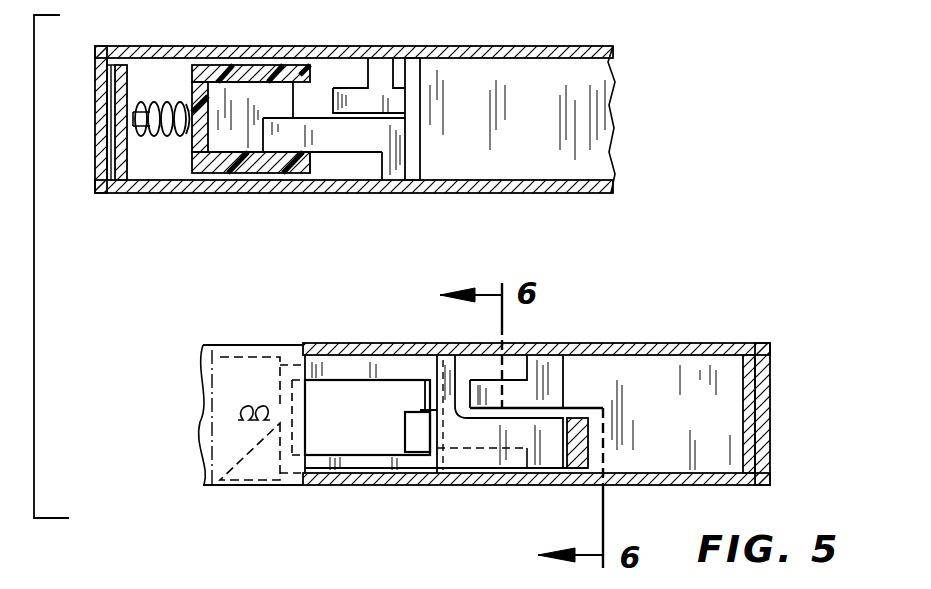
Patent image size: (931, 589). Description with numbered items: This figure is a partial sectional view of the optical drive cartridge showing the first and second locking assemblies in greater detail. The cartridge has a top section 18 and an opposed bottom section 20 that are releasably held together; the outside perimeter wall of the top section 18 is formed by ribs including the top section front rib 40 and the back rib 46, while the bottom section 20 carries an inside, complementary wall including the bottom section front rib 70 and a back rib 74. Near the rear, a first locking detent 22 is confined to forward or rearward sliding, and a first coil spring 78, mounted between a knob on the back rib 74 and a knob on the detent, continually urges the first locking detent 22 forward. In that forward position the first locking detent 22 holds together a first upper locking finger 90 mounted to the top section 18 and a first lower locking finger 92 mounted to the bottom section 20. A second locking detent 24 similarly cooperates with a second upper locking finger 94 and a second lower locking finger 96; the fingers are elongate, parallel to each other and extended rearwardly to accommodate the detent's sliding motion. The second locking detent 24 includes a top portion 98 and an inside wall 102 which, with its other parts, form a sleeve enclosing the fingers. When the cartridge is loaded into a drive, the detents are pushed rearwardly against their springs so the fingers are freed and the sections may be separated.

The top section 18 is at (540, 46).
The bottom section 20 is at (567, 189).
The first locking detent 22 is at (239, 72).
The second locking detent 24 is at (347, 397).
The top section front rib 40 is at (770, 406).
The back rib 46 is at (95, 92).
The bottom section front rib 70 is at (743, 410).
The back rib 74 is at (121, 150).
The first coil spring 78 is at (160, 137).
The first upper locking finger 90 is at (367, 88).
The first lower locking finger 92 is at (353, 145).
The second upper locking finger 94 is at (517, 378).
The second lower locking finger 96 is at (507, 438).
The top portion 98 is at (411, 370).
The inside wall 102 is at (368, 447).